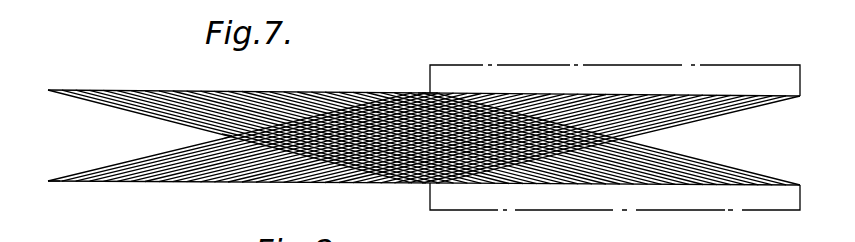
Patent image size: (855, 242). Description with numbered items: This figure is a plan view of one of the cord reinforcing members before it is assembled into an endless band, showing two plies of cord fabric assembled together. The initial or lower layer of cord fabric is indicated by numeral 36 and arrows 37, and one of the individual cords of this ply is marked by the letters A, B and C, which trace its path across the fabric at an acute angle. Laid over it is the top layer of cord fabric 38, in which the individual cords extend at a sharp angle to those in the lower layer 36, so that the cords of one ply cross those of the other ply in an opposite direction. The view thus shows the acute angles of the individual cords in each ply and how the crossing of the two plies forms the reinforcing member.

The initial layer of cord fabric 36 is at (625, 94).
The arrows 37 is at (679, 66).
The top layer of cord fabric 38 is at (653, 210).
The individual cord A is at (48, 182).
The individual cord B is at (222, 137).
The individual cord C is at (424, 93).